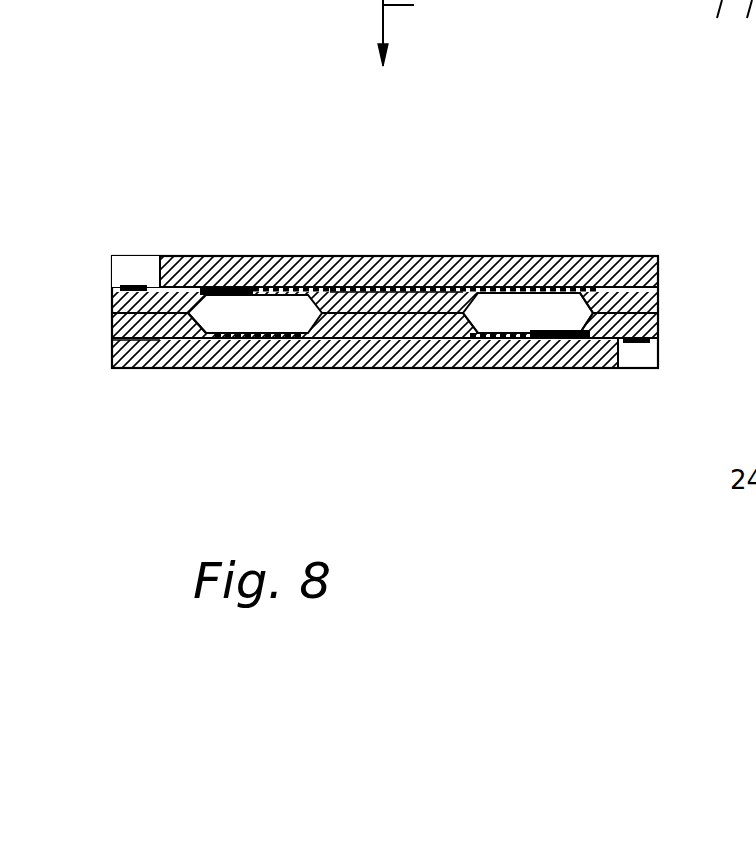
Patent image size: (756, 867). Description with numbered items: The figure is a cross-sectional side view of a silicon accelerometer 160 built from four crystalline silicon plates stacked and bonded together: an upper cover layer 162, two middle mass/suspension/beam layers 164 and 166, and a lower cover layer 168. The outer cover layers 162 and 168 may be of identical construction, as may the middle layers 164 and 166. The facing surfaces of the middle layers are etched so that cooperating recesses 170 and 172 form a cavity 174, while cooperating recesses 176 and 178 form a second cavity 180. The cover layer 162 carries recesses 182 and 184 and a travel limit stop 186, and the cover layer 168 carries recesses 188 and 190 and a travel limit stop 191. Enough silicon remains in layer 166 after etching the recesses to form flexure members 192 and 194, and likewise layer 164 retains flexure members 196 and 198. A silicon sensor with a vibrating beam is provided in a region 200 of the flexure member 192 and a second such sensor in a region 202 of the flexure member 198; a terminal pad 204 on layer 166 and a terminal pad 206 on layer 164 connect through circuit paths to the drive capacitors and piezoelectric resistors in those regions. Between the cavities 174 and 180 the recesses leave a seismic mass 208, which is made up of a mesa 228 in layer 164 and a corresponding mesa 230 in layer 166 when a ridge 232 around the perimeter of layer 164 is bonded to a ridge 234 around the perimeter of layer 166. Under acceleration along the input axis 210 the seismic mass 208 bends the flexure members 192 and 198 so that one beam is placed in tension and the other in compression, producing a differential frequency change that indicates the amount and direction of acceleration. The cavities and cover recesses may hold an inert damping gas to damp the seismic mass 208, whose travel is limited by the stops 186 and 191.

The silicon accelerometer 160 is at (497, 78).
The input axis 210 is at (425, 33).
The cover layer 162 is at (658, 266).
The mass/suspension/beam layer 164 is at (658, 296).
The mass/suspension/beam layer 166 is at (658, 323).
The cover layer 168 is at (608, 352).
The recess 170 is at (585, 345).
The recess 172 is at (497, 333).
The cavity 174 is at (597, 290).
The recess 176 is at (190, 332).
The recess 178 is at (268, 292).
The cavity 180 is at (340, 300).
The recess 182 is at (493, 303).
The recess 184 is at (208, 287).
The travel limit stop 186 is at (403, 287).
The recess 188 is at (527, 336).
The recess 190 is at (250, 340).
The travel limit stop 191 is at (378, 340).
The flexure member 192 is at (546, 340).
The flexure member 194 is at (213, 337).
The flexure member 196 is at (533, 293).
The flexure member 198 is at (297, 292).
The region 200 is at (558, 337).
The region 202 is at (245, 287).
The terminal pad 204 is at (645, 343).
The terminal pad 206 is at (125, 270).
The seismic mass 208 is at (320, 336).
The mesa 228 is at (437, 288).
The mesa 230 is at (421, 337).
The ridge 232 is at (121, 289).
The ridge 234 is at (114, 349).